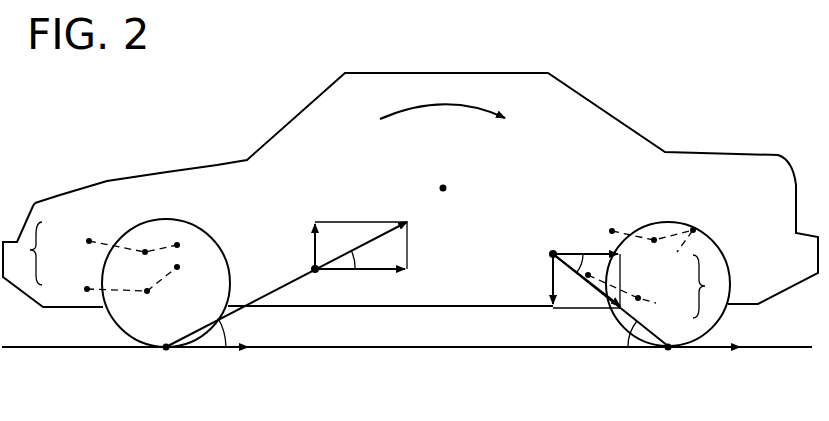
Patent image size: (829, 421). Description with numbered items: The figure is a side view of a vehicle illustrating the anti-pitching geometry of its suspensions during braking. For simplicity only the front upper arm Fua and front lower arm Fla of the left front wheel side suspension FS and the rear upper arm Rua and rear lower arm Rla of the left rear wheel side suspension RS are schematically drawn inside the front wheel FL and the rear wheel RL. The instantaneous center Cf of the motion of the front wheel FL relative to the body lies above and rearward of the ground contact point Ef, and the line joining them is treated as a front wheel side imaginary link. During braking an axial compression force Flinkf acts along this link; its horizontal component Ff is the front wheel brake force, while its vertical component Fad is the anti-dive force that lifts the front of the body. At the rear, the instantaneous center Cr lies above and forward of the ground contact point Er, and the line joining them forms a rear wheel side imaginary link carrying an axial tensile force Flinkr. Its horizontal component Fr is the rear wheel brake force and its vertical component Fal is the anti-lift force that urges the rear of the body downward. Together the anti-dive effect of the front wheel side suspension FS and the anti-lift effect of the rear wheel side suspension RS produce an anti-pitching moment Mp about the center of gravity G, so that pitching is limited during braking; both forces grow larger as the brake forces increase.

The anti-pitching moment Mp is at (446, 100).
The center of gravity G is at (447, 188).
The front wheel FL is at (110, 325).
The front wheel side suspension FS is at (26, 253).
The front upper arm Fua is at (88, 240).
The front lower arm Fla is at (86, 288).
The axial compression force Flinkf is at (375, 221).
The instantaneous center Cf is at (312, 270).
The anti-dive force Fad is at (313, 246).
The front wheel brake force Ff is at (335, 273).
The ground contact point Ef is at (166, 350).
The rear wheel RL is at (725, 322).
The rear wheel side suspension RS is at (710, 286).
The rear upper arm Rua is at (652, 252).
The rear lower arm Rla is at (636, 295).
The axial tensile force Flinkr is at (578, 262).
The instantaneous center Cr is at (550, 255).
The rear wheel brake force Fr is at (577, 253).
The anti-lift force Fal is at (551, 283).
The ground contact point Er is at (668, 350).